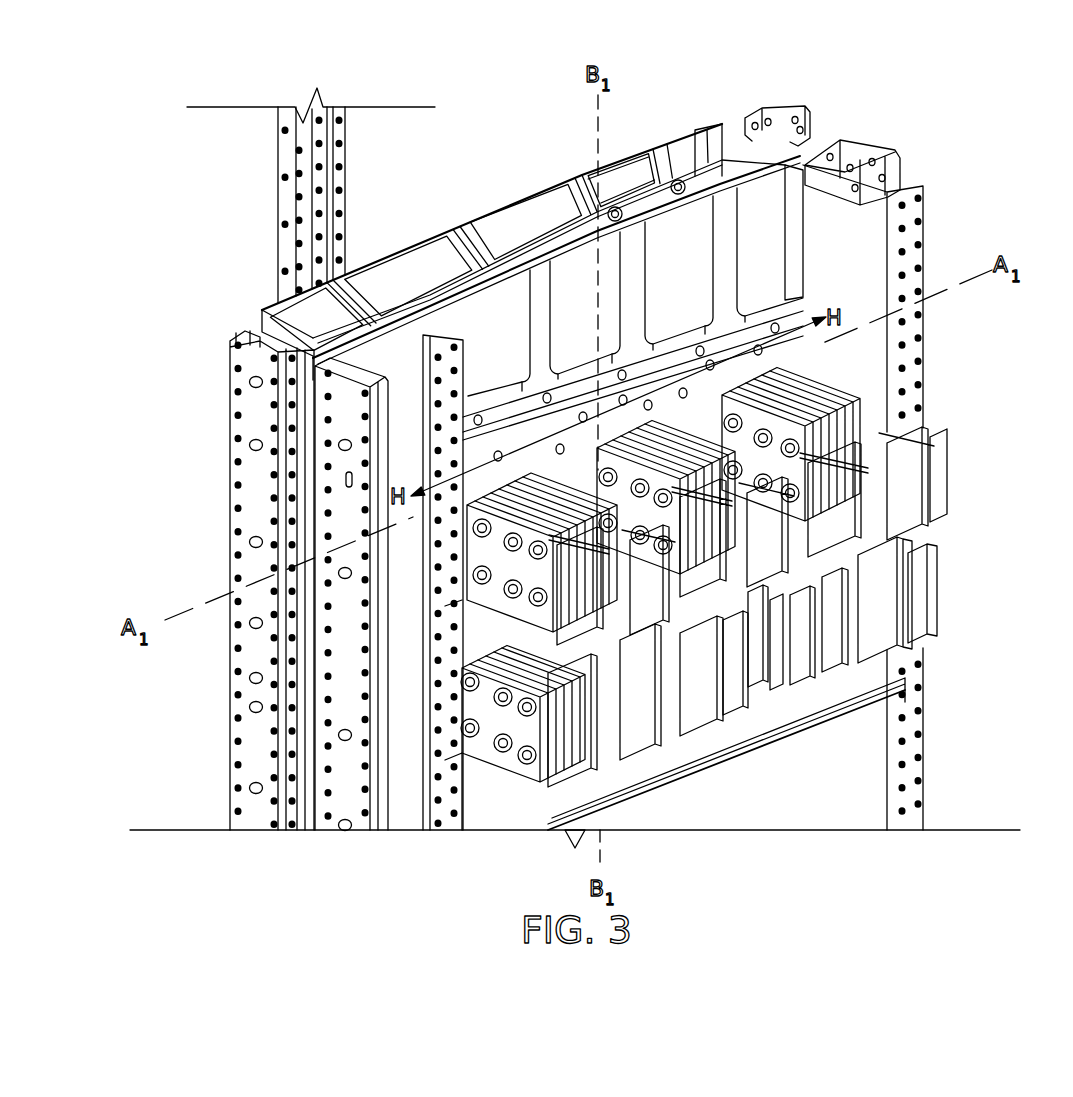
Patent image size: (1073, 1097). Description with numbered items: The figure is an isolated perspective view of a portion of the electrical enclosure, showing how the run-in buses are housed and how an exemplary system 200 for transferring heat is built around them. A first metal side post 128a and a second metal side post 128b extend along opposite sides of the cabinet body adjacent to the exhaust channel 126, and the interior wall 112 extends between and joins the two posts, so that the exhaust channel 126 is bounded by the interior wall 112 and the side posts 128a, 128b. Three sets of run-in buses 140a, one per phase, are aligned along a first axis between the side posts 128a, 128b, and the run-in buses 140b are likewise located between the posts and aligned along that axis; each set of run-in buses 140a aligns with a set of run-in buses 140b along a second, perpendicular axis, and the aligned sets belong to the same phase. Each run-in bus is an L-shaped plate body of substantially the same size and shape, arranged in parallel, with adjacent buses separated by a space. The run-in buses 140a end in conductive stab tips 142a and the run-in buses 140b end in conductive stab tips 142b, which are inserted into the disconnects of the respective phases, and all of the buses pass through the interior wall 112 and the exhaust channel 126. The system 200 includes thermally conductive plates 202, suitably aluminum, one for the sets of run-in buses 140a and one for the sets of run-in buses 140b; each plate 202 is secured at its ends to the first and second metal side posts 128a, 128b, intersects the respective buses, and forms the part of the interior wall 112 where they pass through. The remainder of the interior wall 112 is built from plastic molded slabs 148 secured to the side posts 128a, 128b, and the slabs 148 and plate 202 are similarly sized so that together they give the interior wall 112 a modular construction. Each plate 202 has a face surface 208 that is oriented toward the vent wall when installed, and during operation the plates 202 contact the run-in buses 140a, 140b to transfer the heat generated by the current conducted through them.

The interior wall 112 is at (723, 190).
The exhaust channel 126 is at (635, 423).
The first metal side post 128a is at (373, 335).
The second metal side post 128b is at (852, 193).
The first set of run-in buses 140a is at (510, 773).
The second set of run-in buses 140b is at (622, 442).
The conductive stab tips 142a is at (797, 683).
The conductive stab tips 142b is at (967, 487).
The plastic molded slabs 148 is at (410, 360).
The system for transferring heat 200 is at (783, 106).
The thermally conductive plate 202 is at (802, 310).
The face surface 208 is at (590, 278).